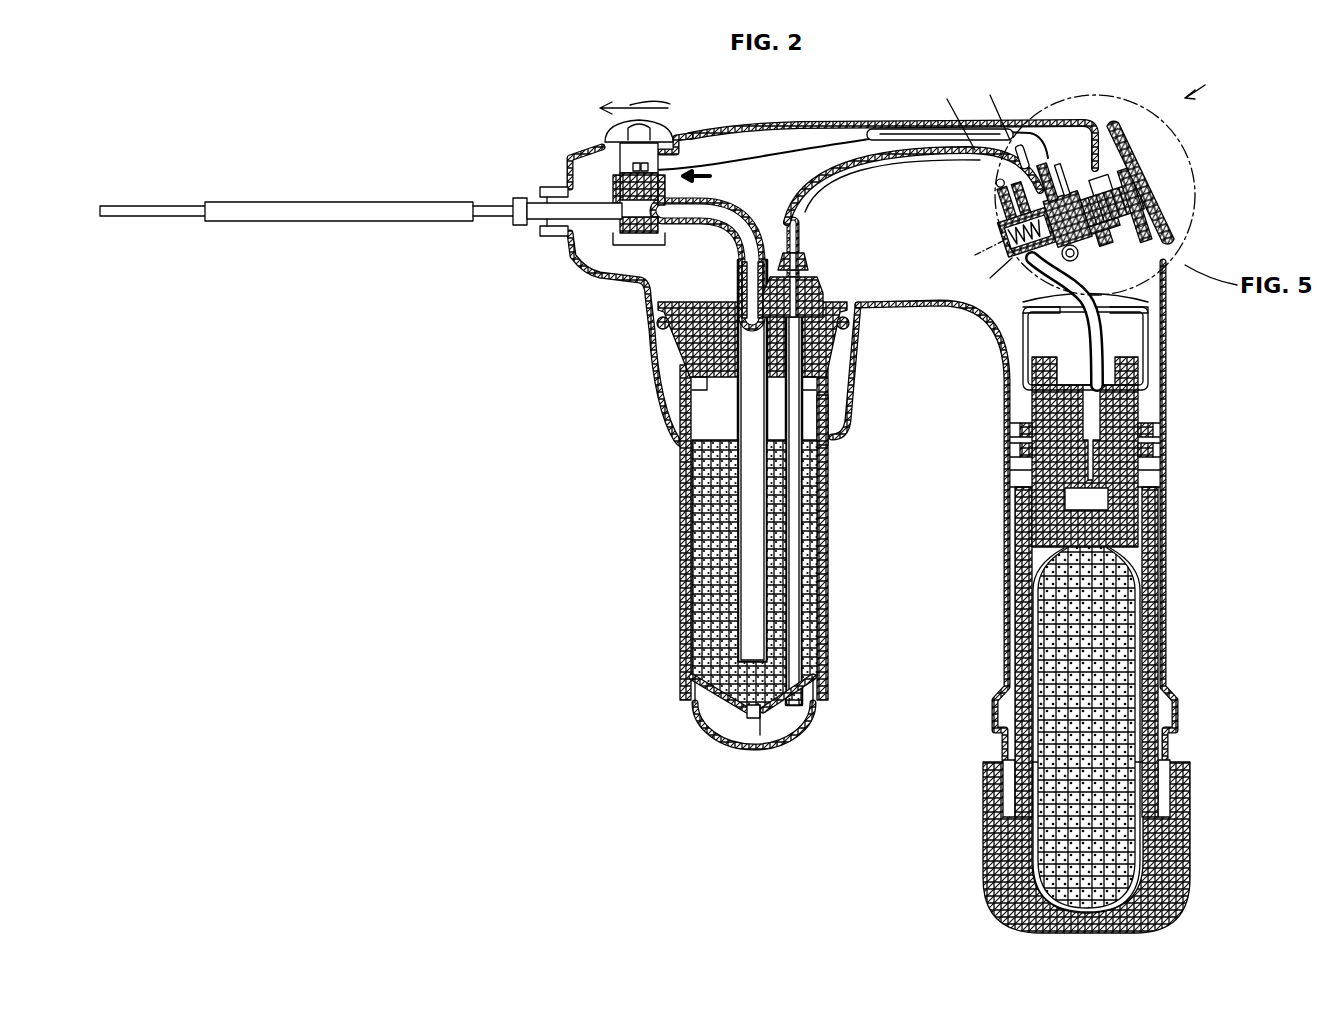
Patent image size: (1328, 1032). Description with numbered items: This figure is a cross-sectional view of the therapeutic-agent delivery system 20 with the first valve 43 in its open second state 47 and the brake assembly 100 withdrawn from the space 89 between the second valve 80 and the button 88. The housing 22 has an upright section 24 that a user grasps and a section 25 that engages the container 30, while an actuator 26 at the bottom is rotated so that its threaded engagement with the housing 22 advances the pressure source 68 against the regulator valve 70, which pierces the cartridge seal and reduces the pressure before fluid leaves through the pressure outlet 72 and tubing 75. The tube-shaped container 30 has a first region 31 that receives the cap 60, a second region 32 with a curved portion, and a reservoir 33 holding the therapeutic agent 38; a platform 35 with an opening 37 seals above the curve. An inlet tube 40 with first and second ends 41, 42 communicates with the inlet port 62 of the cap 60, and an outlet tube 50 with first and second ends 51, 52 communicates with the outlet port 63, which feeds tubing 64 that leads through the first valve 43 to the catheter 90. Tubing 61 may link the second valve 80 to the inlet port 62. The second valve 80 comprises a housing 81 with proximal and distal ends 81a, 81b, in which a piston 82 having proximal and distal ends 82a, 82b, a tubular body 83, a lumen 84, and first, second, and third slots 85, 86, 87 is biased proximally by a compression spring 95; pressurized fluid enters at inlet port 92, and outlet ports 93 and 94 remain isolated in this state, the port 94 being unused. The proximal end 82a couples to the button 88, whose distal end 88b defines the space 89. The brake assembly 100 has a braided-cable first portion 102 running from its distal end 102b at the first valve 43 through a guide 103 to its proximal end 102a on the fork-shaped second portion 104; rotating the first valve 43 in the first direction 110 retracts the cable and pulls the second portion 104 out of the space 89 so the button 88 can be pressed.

The system 20 is at (1209, 79).
The housing 22 is at (792, 127).
The upright section 24 is at (1166, 438).
The section for engaging the container 25 is at (665, 405).
The actuator 26 is at (1170, 876).
The container 30 is at (680, 585).
The first region 31 is at (830, 408).
The second region 32 is at (793, 730).
The reservoir 33 is at (700, 630).
The platform 35 is at (760, 735).
The opening 37 is at (750, 715).
The therapeutic agent 38 is at (700, 522).
The inlet tube 40 is at (800, 500).
The first end of the inlet tube 41 is at (802, 258).
The second end of the inlet tube 42 is at (810, 710).
The first valve 43 is at (615, 127).
The second state 47 is at (630, 228).
The outlet tube 50 is at (752, 478).
The first end of the outlet tube 51 is at (730, 340).
The second end of the outlet tube 52 is at (705, 700).
The cap 60 is at (660, 345).
The tubing 61 is at (872, 172).
The inlet port 62 is at (820, 290).
The outlet port 63 is at (742, 290).
The tubing 64 is at (705, 200).
The pressure source 68 is at (1110, 655).
The regulator valve 70 is at (1128, 360).
The pressure outlet 72 is at (1140, 330).
The tubing 75 is at (1150, 300).
The second valve 80 is at (988, 221).
The housing 81 is at (978, 194).
The proximal end of the housing 81a is at (1201, 244).
The distal end of the housing 81b is at (980, 230).
The piston 82 is at (1028, 263).
The proximal end of the piston 82a is at (1173, 202).
The distal end of the piston 82b is at (990, 252).
The tubular body 83 is at (1120, 259).
The lumen 84 is at (1154, 185).
The first slot 85 is at (1075, 260).
The second slot 86 is at (1106, 135).
The third slot 87 is at (1028, 138).
The button 88 is at (1185, 205).
The distal end of the button 88b is at (1181, 169).
The space 89 is at (1171, 198).
The catheter 90 is at (400, 200).
The inlet port 92 is at (1035, 268).
The outlet port 93 is at (1022, 200).
The outlet port 94 is at (1010, 215).
The compression spring 95 is at (990, 278).
The brake assembly 100 is at (872, 132).
The first portion 102 is at (728, 158).
The proximal end 102a is at (1057, 109).
The distal end 102b is at (632, 166).
The guide 103 is at (912, 133).
The second portion 104 is at (1096, 124).
The first direction 110 is at (620, 108).